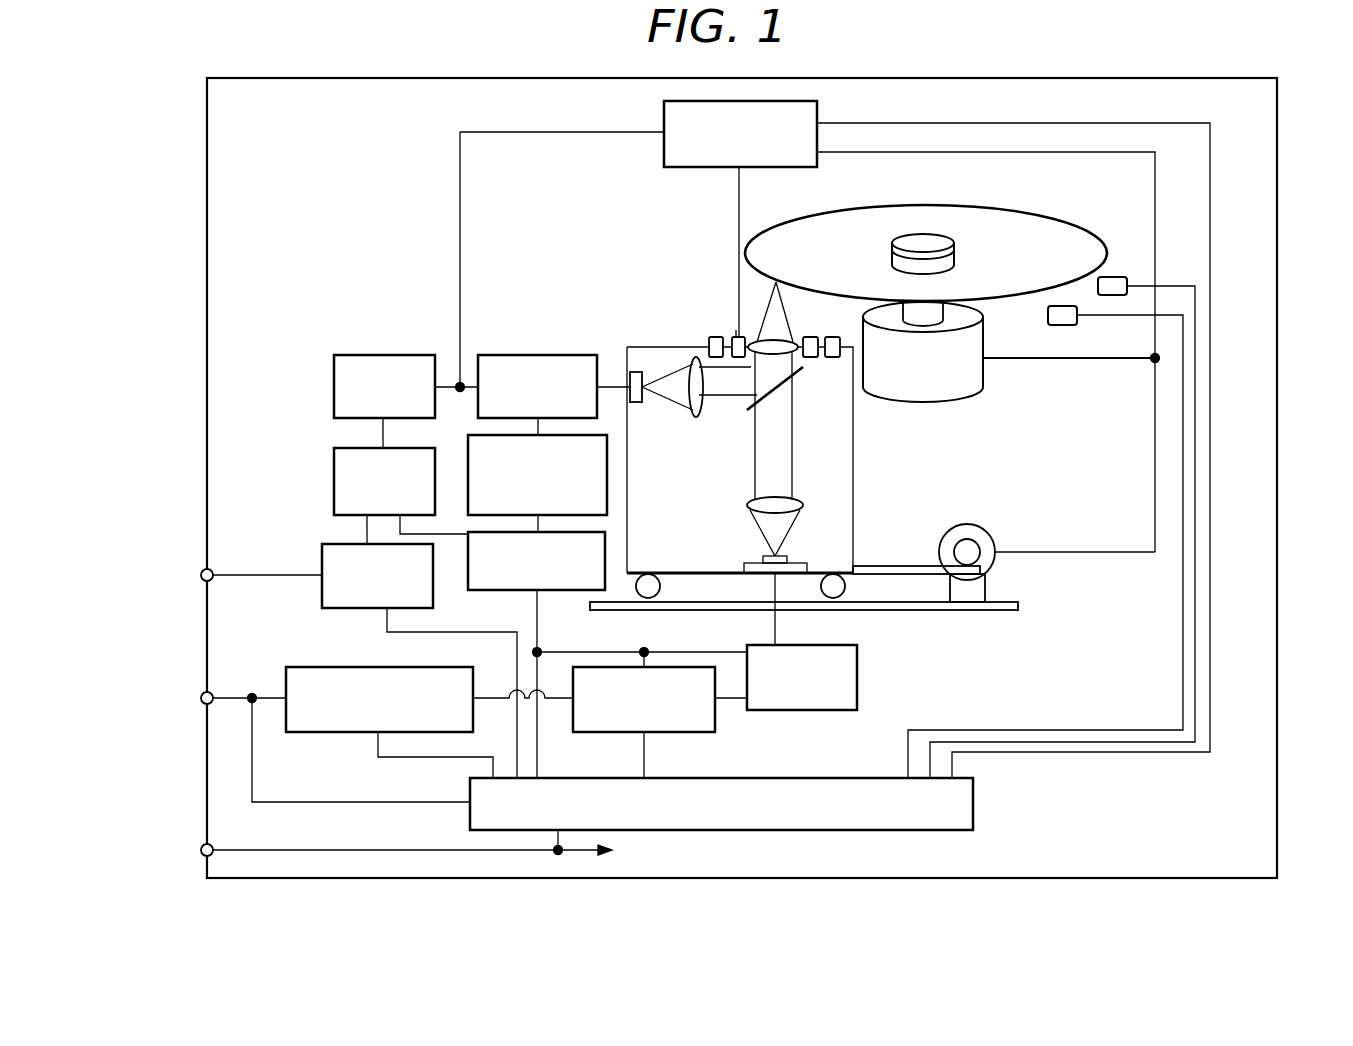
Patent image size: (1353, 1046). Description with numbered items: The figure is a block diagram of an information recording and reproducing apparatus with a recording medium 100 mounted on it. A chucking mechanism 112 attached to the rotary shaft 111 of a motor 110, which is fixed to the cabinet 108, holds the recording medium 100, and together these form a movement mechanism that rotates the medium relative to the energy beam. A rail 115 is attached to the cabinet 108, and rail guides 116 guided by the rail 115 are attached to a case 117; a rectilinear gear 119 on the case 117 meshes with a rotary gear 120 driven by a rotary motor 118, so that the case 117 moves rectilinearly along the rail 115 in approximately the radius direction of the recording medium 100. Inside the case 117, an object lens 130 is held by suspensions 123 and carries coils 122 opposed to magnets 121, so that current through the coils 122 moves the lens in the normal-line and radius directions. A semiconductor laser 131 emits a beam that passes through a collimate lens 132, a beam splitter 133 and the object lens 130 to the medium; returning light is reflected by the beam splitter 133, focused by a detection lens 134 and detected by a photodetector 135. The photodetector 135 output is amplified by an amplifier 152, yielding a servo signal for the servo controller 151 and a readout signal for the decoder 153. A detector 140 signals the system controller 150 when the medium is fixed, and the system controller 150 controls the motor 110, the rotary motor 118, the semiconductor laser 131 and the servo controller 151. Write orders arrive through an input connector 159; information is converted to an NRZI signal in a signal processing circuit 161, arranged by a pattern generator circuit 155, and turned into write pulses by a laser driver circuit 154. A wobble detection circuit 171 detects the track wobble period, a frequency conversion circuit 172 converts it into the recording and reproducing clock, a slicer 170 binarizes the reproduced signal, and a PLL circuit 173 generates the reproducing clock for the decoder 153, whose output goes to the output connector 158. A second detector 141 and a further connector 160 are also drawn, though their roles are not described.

The recording medium 100 is at (1015, 222).
The cabinet 108 is at (1277, 795).
The motor 110 is at (960, 380).
The rotary shaft 111 is at (945, 312).
The chucking mechanism 112 is at (940, 240).
The rail 115 is at (1018, 606).
The rail guides 116 is at (656, 596).
The case 117 is at (853, 478).
The rotary motor 118 is at (988, 532).
The rectilinear gear 119 is at (898, 567).
The rotary gear 120 is at (961, 540).
The magnets 121 is at (710, 343).
The coils 122 is at (738, 334).
The suspensions 123 is at (728, 338).
The object lens 130 is at (773, 347).
The semiconductor laser 131 is at (764, 559).
The collimate lens 132 is at (749, 507).
The beam splitter 133 is at (745, 410).
The detection lens 134 is at (696, 417).
The photodetector 135 is at (636, 402).
The detector 140 is at (1076, 324).
The position sensor 141 is at (1114, 277).
The system controller 150 is at (973, 820).
The servo controller 151 is at (664, 152).
The amplifier 152 is at (578, 355).
The decoder 153 is at (322, 562).
The laser driver circuit 154 is at (857, 692).
The pattern generator circuit 155 is at (715, 722).
The output connector 158 is at (200, 578).
The input connector 159 is at (200, 700).
The control terminal 160 is at (200, 850).
The signal processing circuit 161 is at (286, 680).
The slicer 170 is at (334, 380).
The wobble detection circuit 171 is at (466, 464).
The frequency conversion circuit 172 is at (500, 590).
The PLL circuit 173 is at (334, 472).